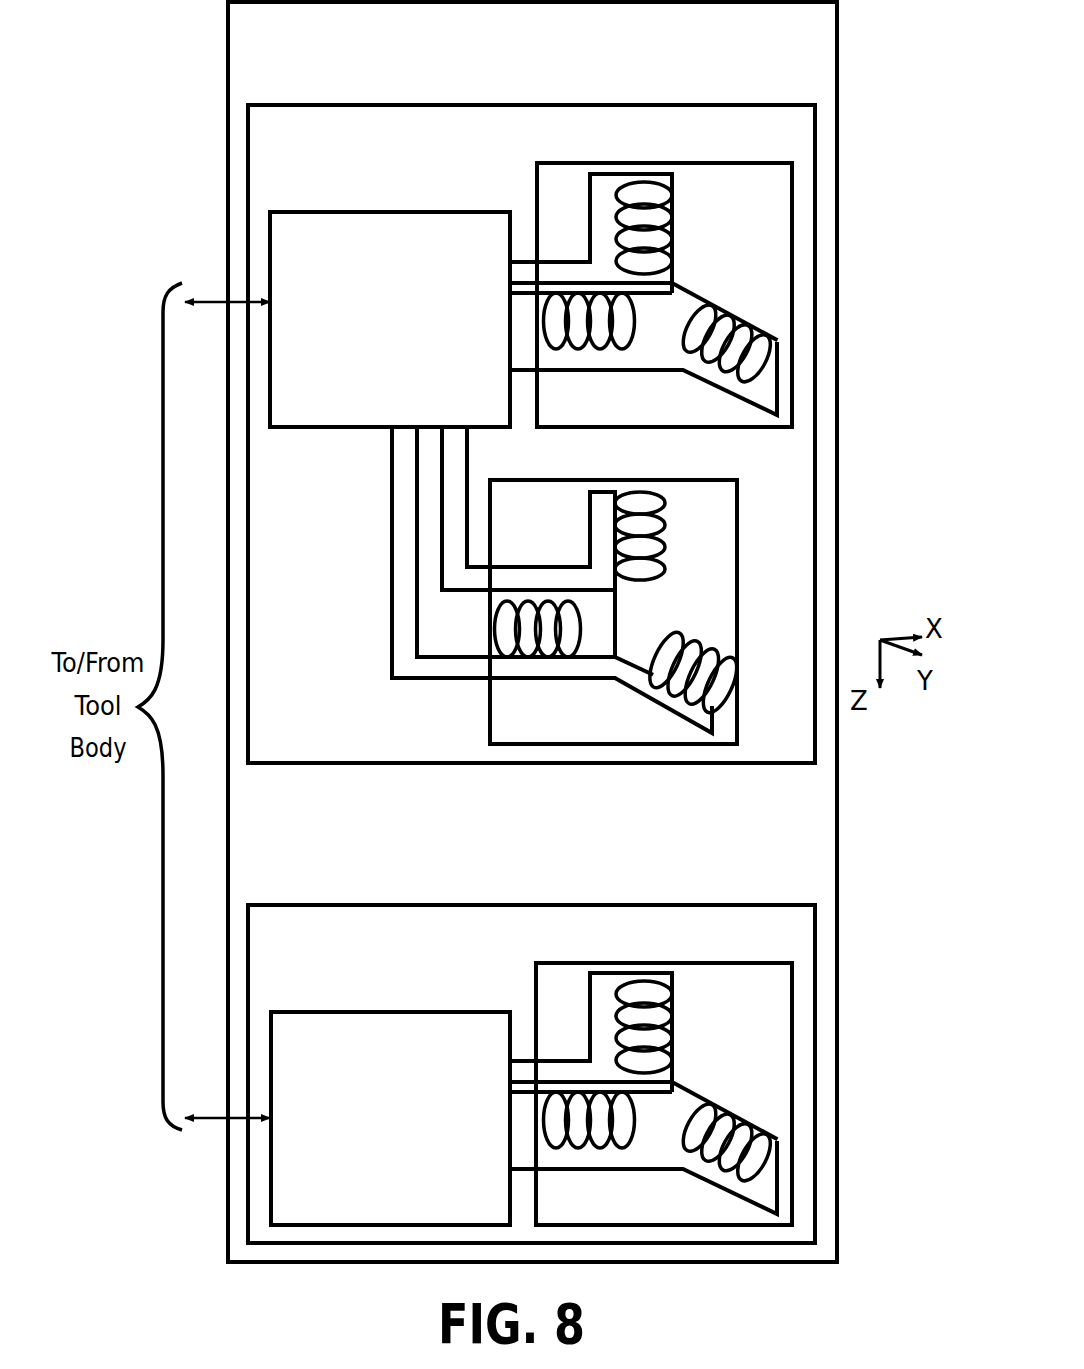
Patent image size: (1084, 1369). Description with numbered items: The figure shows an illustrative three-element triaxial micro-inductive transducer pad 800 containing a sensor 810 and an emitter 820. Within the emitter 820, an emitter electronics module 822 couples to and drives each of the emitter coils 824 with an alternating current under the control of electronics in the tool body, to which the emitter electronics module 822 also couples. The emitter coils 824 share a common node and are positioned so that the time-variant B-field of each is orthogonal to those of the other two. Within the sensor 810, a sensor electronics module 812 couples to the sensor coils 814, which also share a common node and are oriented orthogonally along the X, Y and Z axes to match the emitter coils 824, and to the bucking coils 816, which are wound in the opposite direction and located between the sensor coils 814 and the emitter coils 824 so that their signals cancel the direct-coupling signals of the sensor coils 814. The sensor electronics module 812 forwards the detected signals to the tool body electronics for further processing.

The micro-inductive transducer pad 800 is at (285, 79).
The sensor 810 is at (308, 184).
The sensor electronics module 812 is at (329, 328).
The sensor coils 814 is at (768, 201).
The bucking coils 816 is at (562, 521).
The emitter 820 is at (308, 984).
The emitter electronics module 822 is at (329, 1127).
The emitter coils 824 is at (651, 1094).